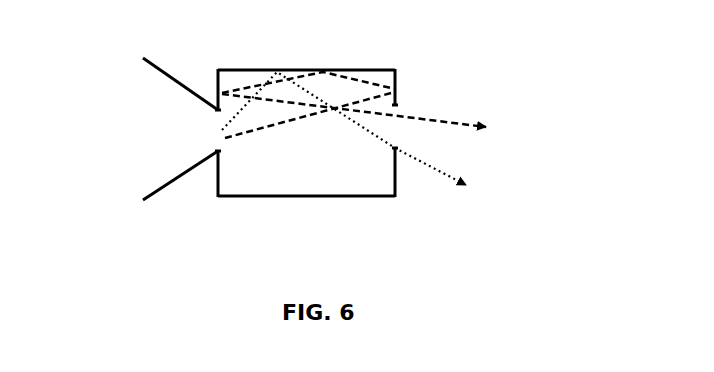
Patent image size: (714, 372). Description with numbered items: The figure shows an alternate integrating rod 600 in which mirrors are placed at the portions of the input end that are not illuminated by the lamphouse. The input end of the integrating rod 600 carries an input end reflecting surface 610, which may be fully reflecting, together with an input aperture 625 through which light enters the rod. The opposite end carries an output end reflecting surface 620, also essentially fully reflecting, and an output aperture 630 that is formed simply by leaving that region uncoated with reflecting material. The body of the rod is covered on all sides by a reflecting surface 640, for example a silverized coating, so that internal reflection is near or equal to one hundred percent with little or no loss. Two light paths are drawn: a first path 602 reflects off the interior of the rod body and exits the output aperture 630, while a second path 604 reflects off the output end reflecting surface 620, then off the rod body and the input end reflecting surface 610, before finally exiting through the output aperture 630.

The integrating rod 600 is at (317, 157).
The input end reflecting surface 610 is at (212, 177).
The output end reflecting surface 620 is at (399, 171).
The input aperture 625 is at (211, 130).
The output aperture 630 is at (398, 129).
The reflecting surface of integrating rod body 640 is at (314, 203).
The first light path 602 is at (348, 143).
The second light path 604 is at (357, 123).